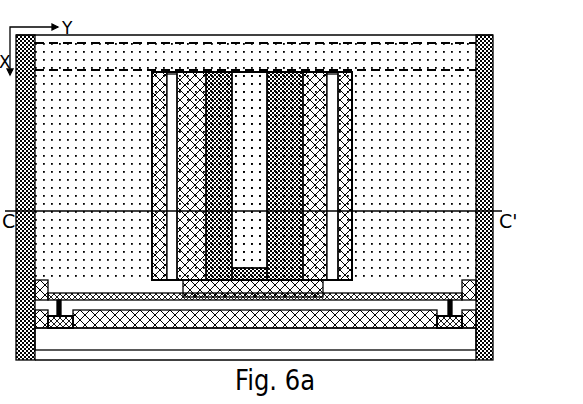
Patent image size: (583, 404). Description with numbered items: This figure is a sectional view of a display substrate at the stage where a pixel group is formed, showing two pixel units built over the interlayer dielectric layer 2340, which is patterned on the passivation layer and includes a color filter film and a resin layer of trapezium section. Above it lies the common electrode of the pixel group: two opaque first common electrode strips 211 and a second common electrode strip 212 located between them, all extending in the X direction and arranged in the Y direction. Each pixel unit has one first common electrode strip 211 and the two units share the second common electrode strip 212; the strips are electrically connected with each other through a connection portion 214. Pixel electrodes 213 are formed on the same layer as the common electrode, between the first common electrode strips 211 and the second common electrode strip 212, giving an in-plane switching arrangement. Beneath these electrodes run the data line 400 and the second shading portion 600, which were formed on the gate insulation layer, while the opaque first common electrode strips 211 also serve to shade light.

The first common electrode strip 211 is at (467, 140).
The second common electrode strip 212 is at (240, 136).
The pixel electrode 213 is at (332, 98).
The connection portion 214 is at (473, 53).
The data line 400 is at (486, 181).
The second shading portion 600 is at (300, 195).
The interlayer dielectric layer 2340 is at (458, 342).